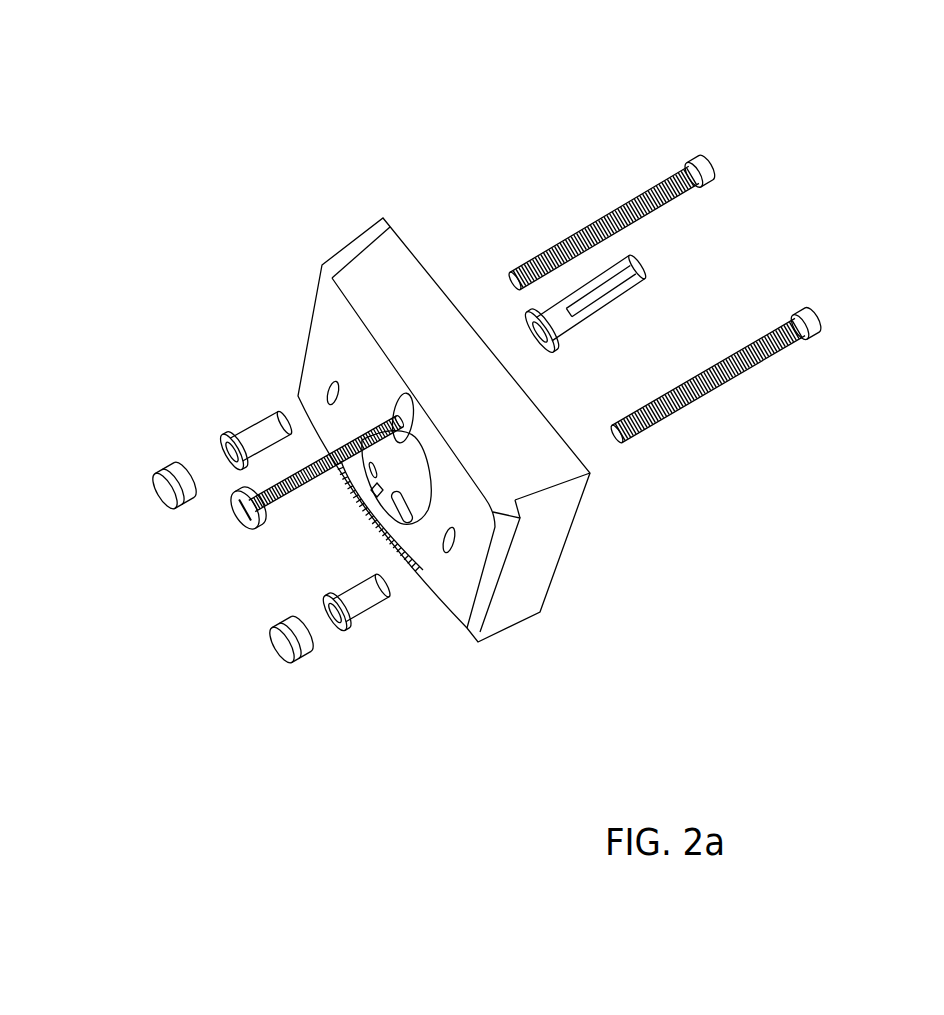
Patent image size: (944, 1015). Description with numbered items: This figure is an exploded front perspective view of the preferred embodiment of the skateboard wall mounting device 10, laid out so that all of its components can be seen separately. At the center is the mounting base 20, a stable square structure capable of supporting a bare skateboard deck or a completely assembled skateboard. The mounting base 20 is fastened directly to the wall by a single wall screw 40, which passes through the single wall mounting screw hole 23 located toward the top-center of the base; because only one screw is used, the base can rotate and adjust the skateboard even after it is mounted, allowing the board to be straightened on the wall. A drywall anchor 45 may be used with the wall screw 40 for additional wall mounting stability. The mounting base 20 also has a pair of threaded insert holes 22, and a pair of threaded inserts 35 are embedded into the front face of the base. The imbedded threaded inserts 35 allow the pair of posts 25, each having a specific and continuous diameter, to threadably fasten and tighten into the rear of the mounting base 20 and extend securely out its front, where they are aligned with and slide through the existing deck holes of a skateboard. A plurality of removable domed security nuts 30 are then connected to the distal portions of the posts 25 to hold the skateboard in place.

The skateboard wall mounting device 10 is at (255, 138).
The mounting base 20 is at (532, 562).
The threaded insert holes 22 is at (324, 390).
The wall mounting screw hole 23 is at (384, 400).
The posts 25 is at (597, 222).
The domed security nuts 30 is at (148, 493).
The threaded inserts 35 is at (262, 425).
The wall screw 40 is at (238, 513).
The drywall anchor 45 is at (654, 271).